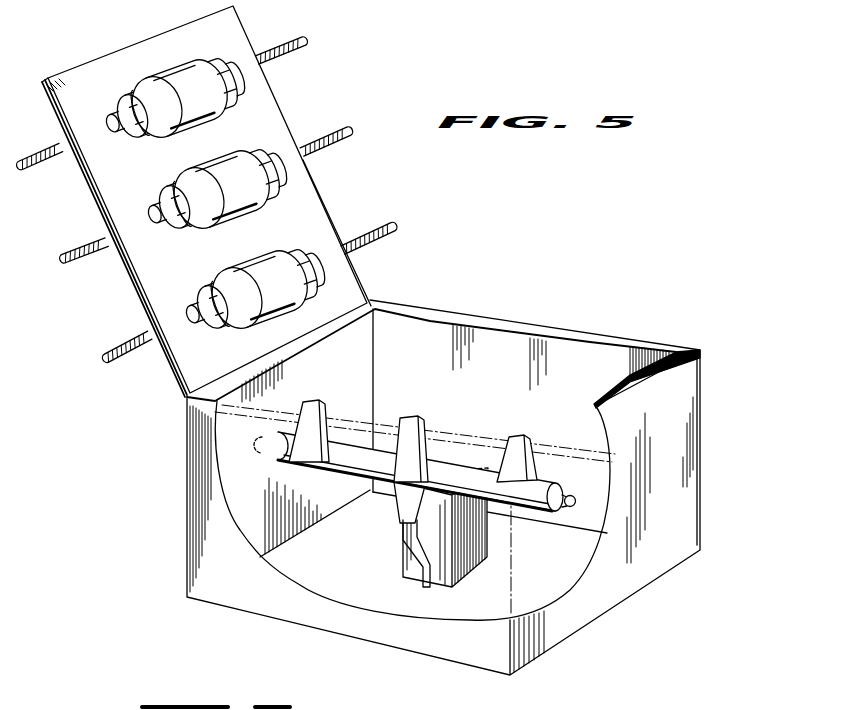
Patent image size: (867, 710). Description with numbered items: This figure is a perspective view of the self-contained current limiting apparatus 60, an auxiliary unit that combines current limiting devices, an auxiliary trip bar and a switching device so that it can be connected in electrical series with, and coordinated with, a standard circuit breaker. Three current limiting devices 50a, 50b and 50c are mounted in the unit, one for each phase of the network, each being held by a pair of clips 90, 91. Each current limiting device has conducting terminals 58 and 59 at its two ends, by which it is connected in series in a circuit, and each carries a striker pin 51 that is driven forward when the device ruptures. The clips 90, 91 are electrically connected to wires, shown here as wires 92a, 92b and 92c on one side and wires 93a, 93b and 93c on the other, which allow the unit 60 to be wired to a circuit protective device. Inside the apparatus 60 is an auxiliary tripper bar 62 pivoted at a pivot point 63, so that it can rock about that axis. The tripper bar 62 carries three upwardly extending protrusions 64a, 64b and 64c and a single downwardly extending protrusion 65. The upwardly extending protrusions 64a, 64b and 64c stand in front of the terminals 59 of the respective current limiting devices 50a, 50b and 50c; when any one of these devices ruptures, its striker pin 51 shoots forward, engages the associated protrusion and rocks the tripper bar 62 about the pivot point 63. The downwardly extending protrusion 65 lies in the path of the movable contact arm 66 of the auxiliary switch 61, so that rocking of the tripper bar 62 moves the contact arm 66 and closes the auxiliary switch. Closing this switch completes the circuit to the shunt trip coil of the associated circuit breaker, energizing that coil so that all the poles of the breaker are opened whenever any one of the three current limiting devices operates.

The current limiting device 50a is at (258, 249).
The current limiting device 50b is at (212, 158).
The current limiting device 50c is at (171, 68).
The striker pin 51 is at (115, 125).
The conducting terminal 58 is at (234, 71).
The conducting terminal 59 is at (138, 138).
The current limiting apparatus 60 is at (514, 316).
The auxiliary switch 61 is at (463, 578).
The auxiliary tripper bar 62 is at (354, 481).
The pivot point 63 is at (256, 452).
The upwardly extending protrusion 64a is at (529, 434).
The upwardly extending protrusion 64b is at (414, 418).
The upwardly extending protrusion 64c is at (313, 401).
The downwardly extending protrusion 65 is at (397, 508).
The movable contact arm 66 is at (410, 552).
The clip 90 is at (133, 92).
The clip 91 is at (220, 66).
The wire 92a is at (120, 358).
The wire 92b is at (76, 262).
The wire 92c is at (43, 167).
The wire 93a is at (377, 245).
The wire 93b is at (328, 148).
The wire 93c is at (291, 59).